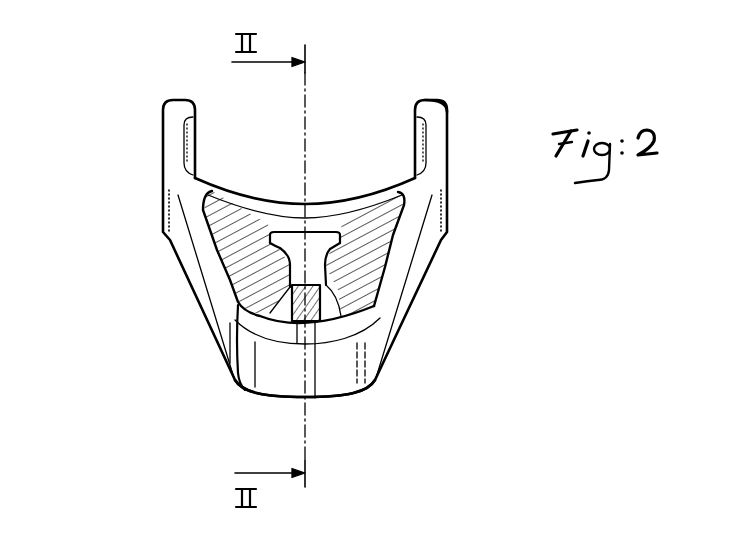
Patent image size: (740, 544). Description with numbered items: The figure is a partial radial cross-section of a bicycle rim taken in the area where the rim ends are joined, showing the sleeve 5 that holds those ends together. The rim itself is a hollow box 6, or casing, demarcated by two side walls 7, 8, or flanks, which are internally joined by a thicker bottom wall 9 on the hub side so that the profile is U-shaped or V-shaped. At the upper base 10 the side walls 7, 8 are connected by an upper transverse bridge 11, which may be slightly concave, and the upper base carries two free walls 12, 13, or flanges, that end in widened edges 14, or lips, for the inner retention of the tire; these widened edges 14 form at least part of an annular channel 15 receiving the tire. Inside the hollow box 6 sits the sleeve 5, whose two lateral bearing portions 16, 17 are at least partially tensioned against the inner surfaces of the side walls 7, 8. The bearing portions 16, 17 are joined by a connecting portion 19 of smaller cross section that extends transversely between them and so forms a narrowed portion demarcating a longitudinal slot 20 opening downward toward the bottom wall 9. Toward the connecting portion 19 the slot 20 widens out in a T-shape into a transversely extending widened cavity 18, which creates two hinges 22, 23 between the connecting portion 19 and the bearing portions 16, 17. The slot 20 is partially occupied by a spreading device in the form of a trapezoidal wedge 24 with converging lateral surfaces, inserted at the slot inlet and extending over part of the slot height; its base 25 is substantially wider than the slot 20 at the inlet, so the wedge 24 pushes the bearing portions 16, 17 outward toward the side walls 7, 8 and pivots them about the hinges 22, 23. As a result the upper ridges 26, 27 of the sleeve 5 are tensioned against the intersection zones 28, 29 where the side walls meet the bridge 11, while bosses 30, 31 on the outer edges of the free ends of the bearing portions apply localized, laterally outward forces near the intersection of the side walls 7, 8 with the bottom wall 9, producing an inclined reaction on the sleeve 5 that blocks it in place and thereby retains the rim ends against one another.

The sleeve 5 is at (353, 267).
The hollow box 6 is at (241, 306).
The side wall 7 is at (221, 280).
The side wall 8 is at (403, 290).
The bottom wall 9 is at (337, 392).
The upper base 10 is at (110, 111).
The upper transverse bridge 11 is at (315, 219).
The free wall 12 is at (164, 128).
The free wall 13 is at (449, 132).
The widened edge 14 is at (432, 100).
The annular channel 15 is at (341, 186).
The bearing portion 16 is at (233, 238).
The bearing portion 17 is at (385, 220).
The widened cavity 18 is at (328, 383).
The connecting portion 19 is at (292, 229).
The slot 20 is at (228, 352).
The hinge 22 is at (265, 228).
The hinge 23 is at (348, 224).
The wedge 24 is at (290, 323).
The base 25 is at (315, 385).
The upper ridge 26 is at (207, 203).
The upper ridge 27 is at (443, 208).
The intersection zone 28 is at (193, 190).
The intersection zone 29 is at (400, 200).
The boss 30 is at (228, 305).
The boss 31 is at (388, 330).